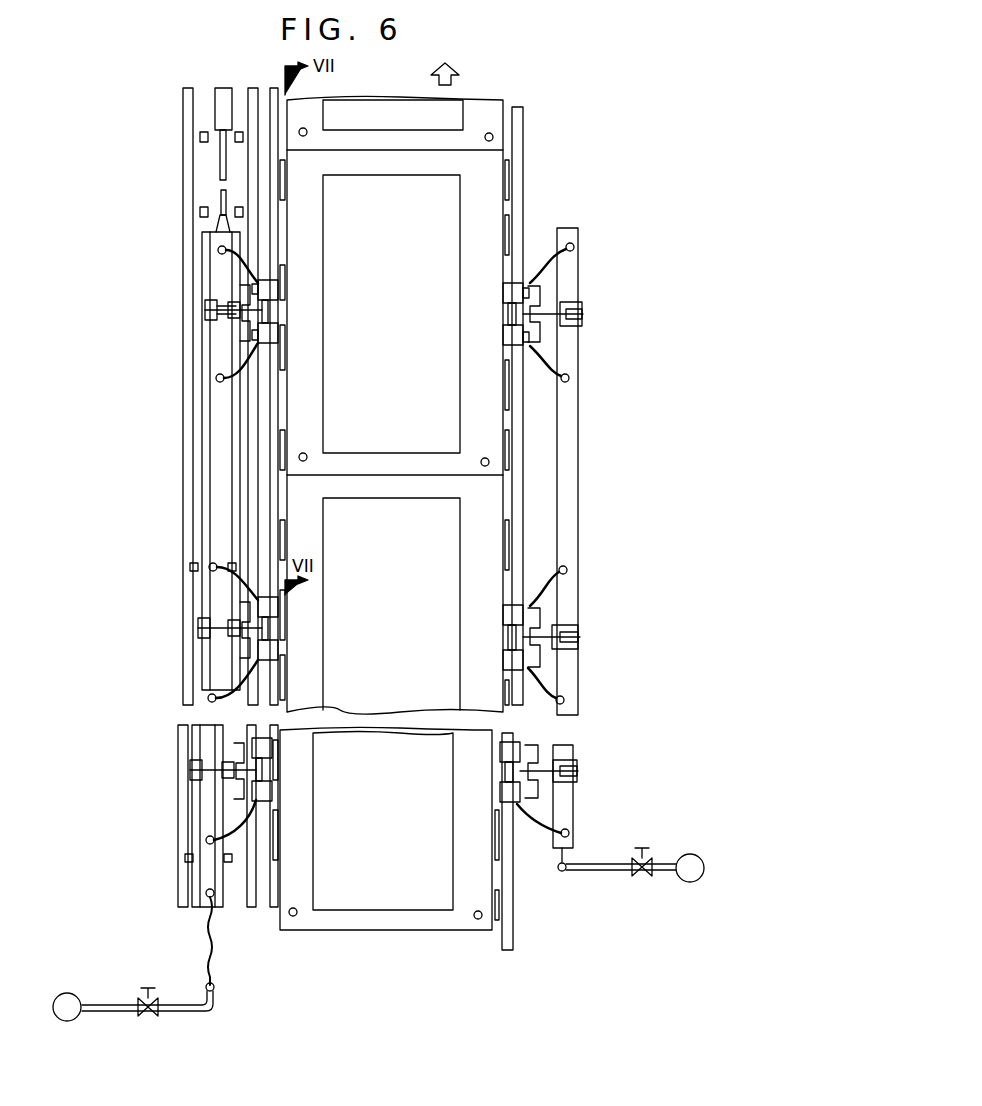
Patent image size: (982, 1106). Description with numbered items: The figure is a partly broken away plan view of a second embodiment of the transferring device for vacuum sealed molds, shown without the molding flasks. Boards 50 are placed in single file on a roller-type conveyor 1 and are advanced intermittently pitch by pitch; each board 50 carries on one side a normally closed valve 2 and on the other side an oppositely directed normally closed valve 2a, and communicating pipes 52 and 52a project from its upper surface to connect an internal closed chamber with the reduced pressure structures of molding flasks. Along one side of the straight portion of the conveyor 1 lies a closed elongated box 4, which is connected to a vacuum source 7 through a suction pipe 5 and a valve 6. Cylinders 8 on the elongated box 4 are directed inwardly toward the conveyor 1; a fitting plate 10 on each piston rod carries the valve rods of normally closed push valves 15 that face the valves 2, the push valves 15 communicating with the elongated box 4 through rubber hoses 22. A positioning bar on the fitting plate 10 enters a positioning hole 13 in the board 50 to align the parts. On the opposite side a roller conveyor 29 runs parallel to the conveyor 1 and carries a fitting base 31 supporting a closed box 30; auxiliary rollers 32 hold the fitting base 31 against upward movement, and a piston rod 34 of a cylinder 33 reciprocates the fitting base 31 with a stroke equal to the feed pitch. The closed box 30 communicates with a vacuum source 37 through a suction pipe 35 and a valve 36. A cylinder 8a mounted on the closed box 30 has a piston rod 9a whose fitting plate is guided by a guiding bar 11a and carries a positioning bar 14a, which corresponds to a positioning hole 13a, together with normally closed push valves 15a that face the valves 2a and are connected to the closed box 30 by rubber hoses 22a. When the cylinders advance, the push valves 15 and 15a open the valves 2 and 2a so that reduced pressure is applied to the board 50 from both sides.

The roller-type conveyor 1 is at (518, 168).
The normally closed valve 2 is at (503, 293).
The normally closed valve 2a is at (280, 287).
The closed elongated box 4 is at (580, 525).
The suction pipe 5 is at (596, 866).
The valve 6 is at (646, 860).
The vacuum source 7 is at (690, 882).
The cylinder 8 is at (585, 312).
The cylinder 8a is at (228, 306).
The piston rod 9a is at (231, 699).
The fitting plate 10 is at (538, 330).
The guiding bar 11a is at (250, 320).
The positioning hole 13 is at (505, 320).
The positioning hole 13a is at (270, 305).
The positioning bar 14a is at (301, 542).
The normally closed push valve 15 is at (530, 286).
The normally closed push valve 15a is at (262, 283).
The rubber hose 22 is at (552, 262).
The rubber hose 22a is at (275, 252).
The roller conveyor 29 is at (252, 182).
The closed box 30 is at (217, 478).
The fitting base 31 is at (200, 447).
The auxiliary roller 32 is at (205, 248).
The cylinder 33 is at (215, 112).
The piston rod 34 is at (220, 160).
The suction pipe 35 is at (208, 945).
The valve 36 is at (152, 1012).
The vacuum source 37 is at (67, 993).
The board 50 is at (480, 108).
The communicating pipe 52 is at (493, 137).
The communicating pipe 52a is at (306, 129).